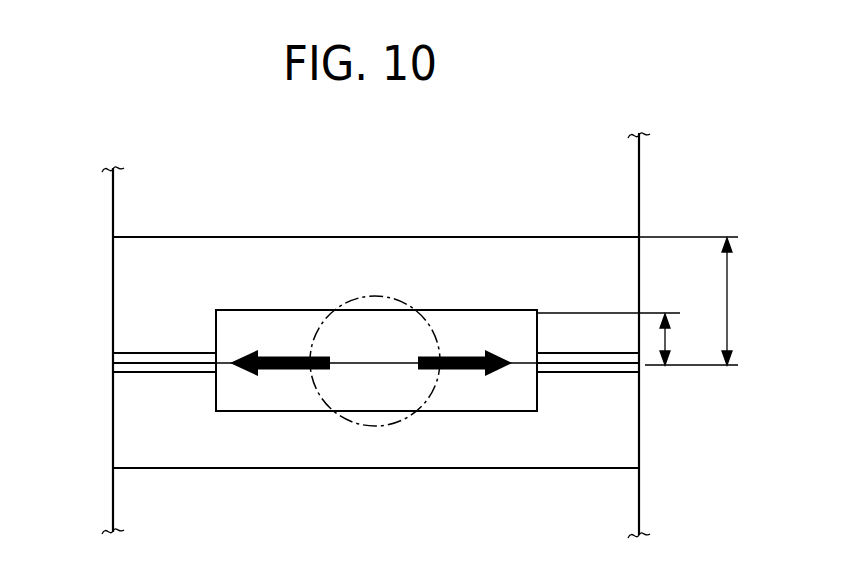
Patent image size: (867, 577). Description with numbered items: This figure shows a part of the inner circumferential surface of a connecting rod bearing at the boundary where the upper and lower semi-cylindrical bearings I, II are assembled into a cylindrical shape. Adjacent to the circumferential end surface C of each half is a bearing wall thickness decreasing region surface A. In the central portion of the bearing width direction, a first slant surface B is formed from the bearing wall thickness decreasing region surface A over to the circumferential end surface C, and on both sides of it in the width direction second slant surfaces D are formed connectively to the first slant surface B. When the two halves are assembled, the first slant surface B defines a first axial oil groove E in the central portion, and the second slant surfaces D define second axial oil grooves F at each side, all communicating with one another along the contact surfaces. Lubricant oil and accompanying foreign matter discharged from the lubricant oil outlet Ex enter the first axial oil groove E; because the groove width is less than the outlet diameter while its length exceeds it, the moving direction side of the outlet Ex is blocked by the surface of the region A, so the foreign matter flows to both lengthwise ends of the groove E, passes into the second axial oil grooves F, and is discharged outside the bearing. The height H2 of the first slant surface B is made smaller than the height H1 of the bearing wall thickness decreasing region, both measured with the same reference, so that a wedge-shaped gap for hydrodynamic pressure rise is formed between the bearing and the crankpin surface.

The bearing wall thickness decreasing region surface A is at (113, 280).
The first slant surface B is at (483, 320).
The circumferential end surface C is at (131, 365).
The second slant surfaces D is at (180, 350).
The first axial oil groove E is at (258, 412).
The second axial oil grooves F is at (197, 375).
The first semi-cylindrical bearing I is at (630, 172).
The second semi-cylindrical bearing II is at (630, 497).
The lubricant oil outlet Ex is at (393, 297).
The height of the bearing wall thickness decreasing region H1 is at (701, 301).
The height of the first slant surface H2 is at (619, 339).